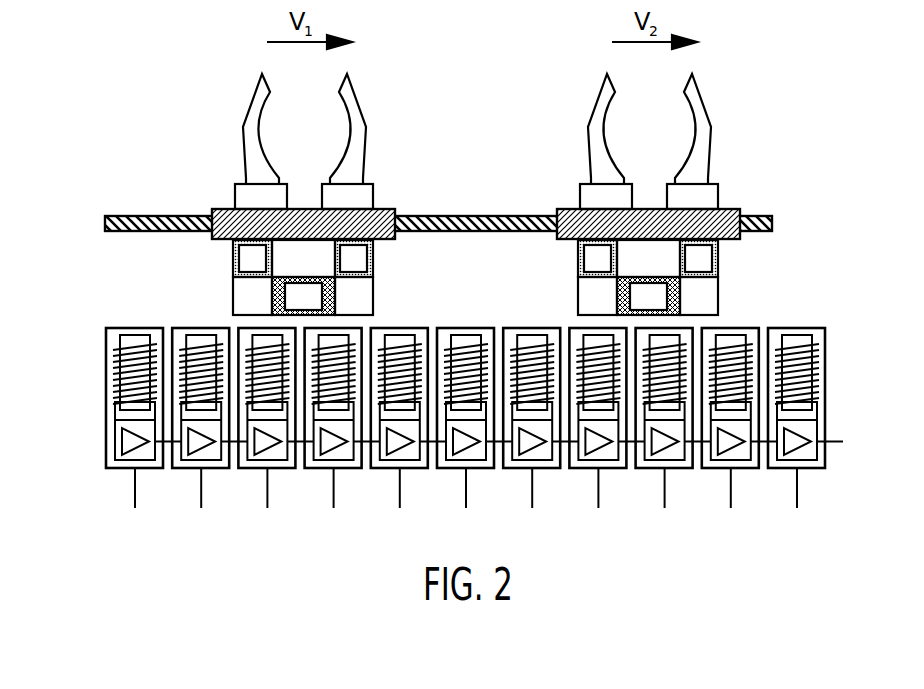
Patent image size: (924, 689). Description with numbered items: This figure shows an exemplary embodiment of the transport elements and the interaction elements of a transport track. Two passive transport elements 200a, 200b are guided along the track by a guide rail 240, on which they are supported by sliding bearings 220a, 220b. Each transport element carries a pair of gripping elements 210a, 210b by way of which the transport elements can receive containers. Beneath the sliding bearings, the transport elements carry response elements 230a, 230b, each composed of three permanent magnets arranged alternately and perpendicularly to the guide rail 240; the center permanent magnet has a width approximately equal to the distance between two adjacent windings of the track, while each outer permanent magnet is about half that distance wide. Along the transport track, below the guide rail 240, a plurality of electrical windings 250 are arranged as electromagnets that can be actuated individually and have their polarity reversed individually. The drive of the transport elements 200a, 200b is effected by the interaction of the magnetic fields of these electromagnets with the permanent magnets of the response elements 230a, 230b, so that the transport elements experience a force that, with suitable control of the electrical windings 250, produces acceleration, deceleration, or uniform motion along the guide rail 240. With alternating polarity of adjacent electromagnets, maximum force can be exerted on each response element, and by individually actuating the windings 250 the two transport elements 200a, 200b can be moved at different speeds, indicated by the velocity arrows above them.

The transport element 200a is at (374, 196).
The transport element 200b is at (719, 196).
The gripping element 210a is at (349, 76).
The gripping element 210b is at (694, 76).
The sliding bearing 220a is at (395, 239).
The sliding bearing 220b is at (740, 239).
The response element 230a is at (374, 297).
The response element 230b is at (719, 297).
The guide rail 240 is at (138, 216).
The electrical windings 250 is at (826, 386).